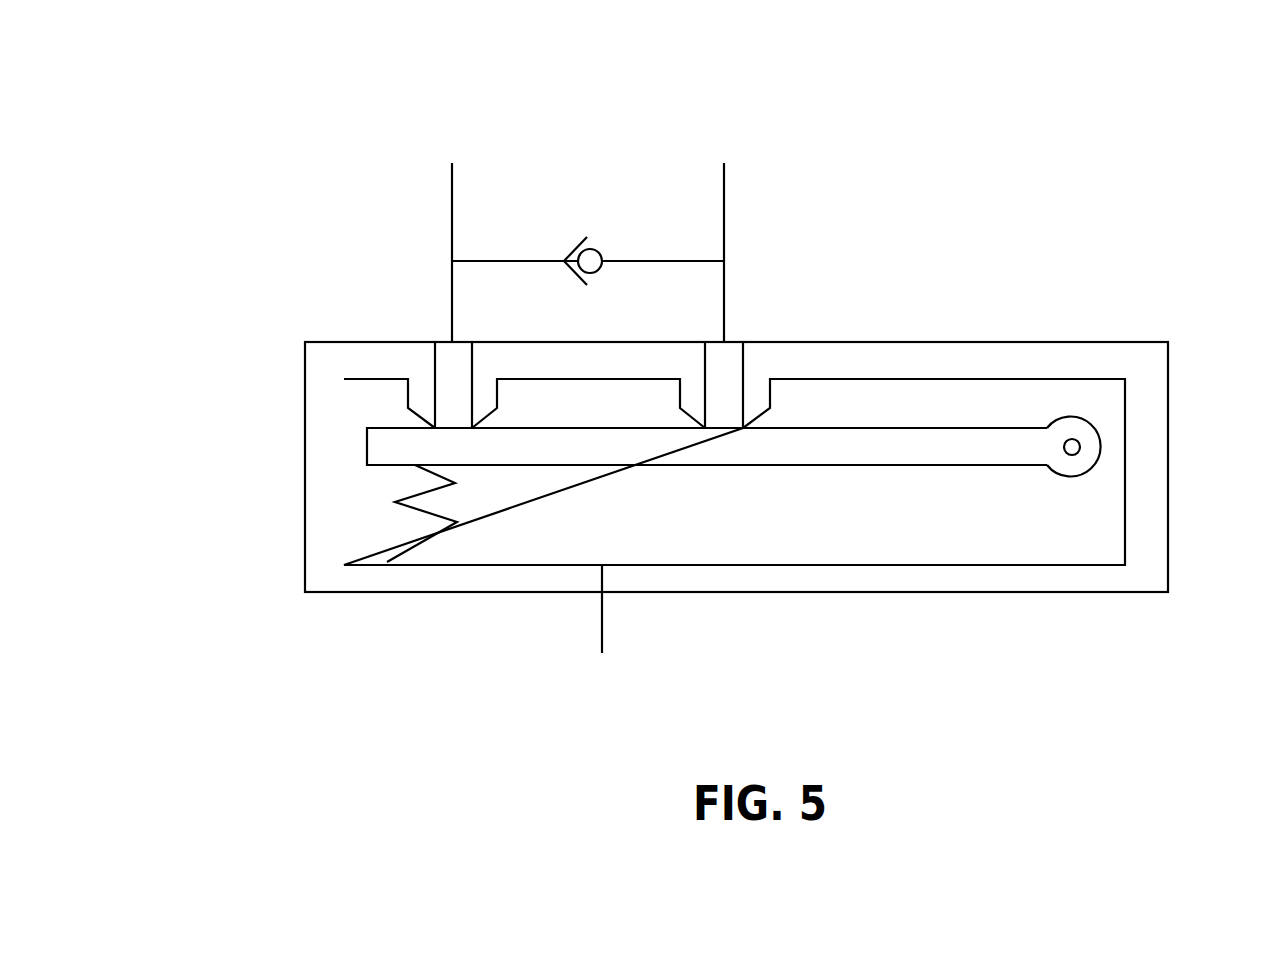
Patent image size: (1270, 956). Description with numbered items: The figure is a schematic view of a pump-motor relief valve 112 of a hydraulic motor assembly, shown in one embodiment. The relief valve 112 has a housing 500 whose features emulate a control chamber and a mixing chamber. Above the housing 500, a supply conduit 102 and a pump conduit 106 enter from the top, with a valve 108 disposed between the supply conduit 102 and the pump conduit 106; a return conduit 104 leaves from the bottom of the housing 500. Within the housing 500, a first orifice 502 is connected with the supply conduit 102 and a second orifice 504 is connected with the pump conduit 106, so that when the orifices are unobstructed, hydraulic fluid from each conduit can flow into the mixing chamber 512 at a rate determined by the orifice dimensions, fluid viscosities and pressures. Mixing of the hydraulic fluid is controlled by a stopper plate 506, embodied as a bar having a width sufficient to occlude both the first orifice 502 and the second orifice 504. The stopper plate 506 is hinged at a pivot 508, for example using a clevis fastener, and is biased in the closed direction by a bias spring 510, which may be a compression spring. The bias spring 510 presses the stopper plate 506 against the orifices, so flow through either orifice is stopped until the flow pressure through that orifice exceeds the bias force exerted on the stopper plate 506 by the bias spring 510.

The pump-motor relief valve 112 is at (1003, 96).
The supply conduit 102 is at (452, 225).
The return conduit 104 is at (602, 618).
The pump conduit 106 is at (724, 227).
The valve 108 is at (566, 226).
The housing 500 is at (318, 500).
The first orifice 502 is at (452, 393).
The second orifice 504 is at (727, 392).
The stopper plate 506 is at (925, 447).
The pivot 508 is at (1090, 434).
The bias spring 510 is at (433, 535).
The mixing chamber 512 is at (883, 528).